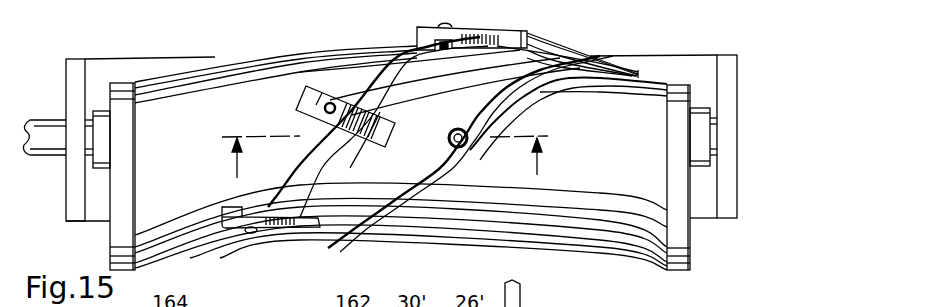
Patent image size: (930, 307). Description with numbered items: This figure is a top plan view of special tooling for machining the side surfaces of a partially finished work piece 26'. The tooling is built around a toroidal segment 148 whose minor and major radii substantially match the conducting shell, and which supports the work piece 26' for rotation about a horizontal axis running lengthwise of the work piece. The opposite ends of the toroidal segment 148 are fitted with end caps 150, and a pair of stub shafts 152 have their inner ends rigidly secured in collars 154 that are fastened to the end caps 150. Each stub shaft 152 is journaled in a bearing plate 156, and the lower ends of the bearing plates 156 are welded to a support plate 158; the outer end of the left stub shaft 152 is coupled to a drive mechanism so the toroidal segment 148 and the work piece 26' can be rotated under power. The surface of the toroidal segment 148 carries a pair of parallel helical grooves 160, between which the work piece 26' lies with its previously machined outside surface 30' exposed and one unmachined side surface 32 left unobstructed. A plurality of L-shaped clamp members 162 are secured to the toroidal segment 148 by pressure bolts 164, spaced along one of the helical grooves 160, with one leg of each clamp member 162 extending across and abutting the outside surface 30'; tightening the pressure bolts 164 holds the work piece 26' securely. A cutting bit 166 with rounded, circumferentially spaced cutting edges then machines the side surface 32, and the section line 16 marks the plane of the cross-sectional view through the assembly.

The section line 16 is at (389, 169).
The partially finished work piece 26' is at (582, 37).
The machined outside surface 30' is at (568, 118).
The unmachined side surface 32 is at (592, 58).
The toroidal segment 148 is at (235, 67).
The end cap 150 is at (118, 221).
The stub shaft 152 is at (50, 130).
The collar 154 is at (100, 110).
The bearing plate 156 is at (73, 166).
The support plate 158 is at (152, 65).
The helical groove 160 is at (388, 72).
The L-shaped clamp member 162 is at (497, 33).
The pressure bolt 164 is at (312, 108).
The cutting bit 166 is at (460, 150).